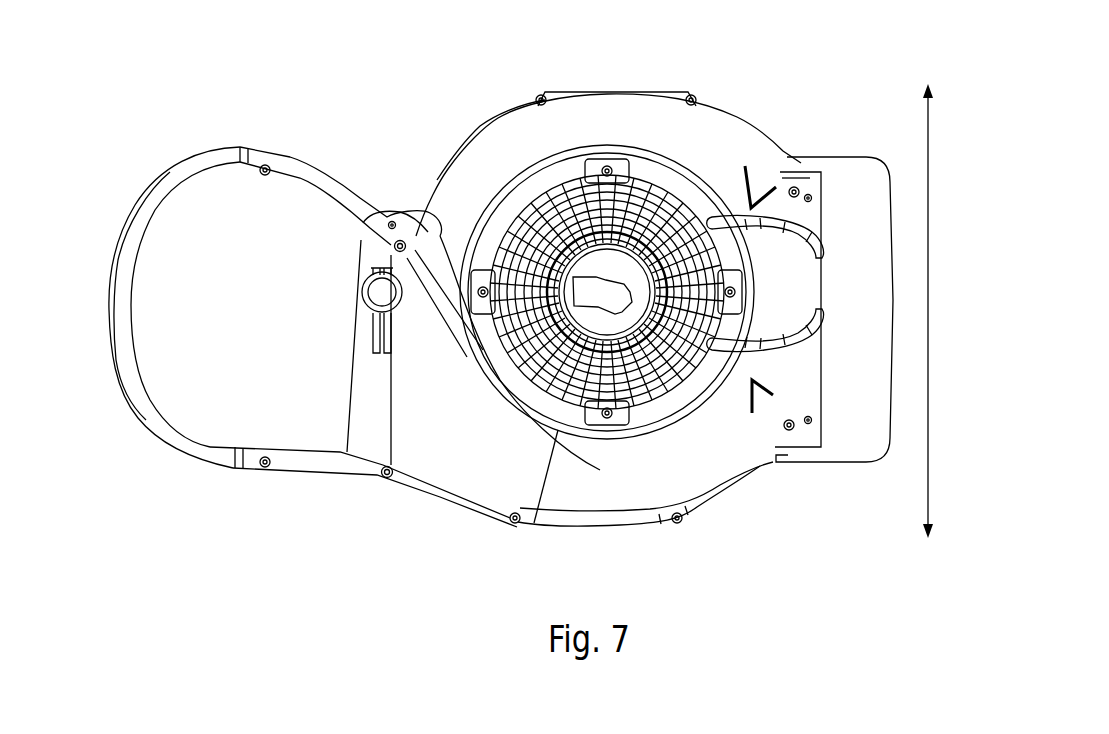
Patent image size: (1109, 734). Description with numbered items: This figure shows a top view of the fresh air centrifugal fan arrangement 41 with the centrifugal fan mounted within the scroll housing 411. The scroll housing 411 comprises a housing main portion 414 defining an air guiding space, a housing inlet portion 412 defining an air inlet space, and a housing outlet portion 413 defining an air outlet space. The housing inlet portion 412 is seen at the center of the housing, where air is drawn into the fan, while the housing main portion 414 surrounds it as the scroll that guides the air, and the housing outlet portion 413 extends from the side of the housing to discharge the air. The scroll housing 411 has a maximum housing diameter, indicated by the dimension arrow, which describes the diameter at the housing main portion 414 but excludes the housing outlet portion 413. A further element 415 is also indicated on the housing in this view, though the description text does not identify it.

The fresh air centrifugal fan arrangement 41 is at (895, 277).
The scroll housing 411 is at (631, 291).
The housing inlet portion 412 is at (639, 214).
The housing outlet portion 413 is at (293, 308).
The housing main portion 414 is at (475, 435).
The fan hub 415 is at (719, 448).